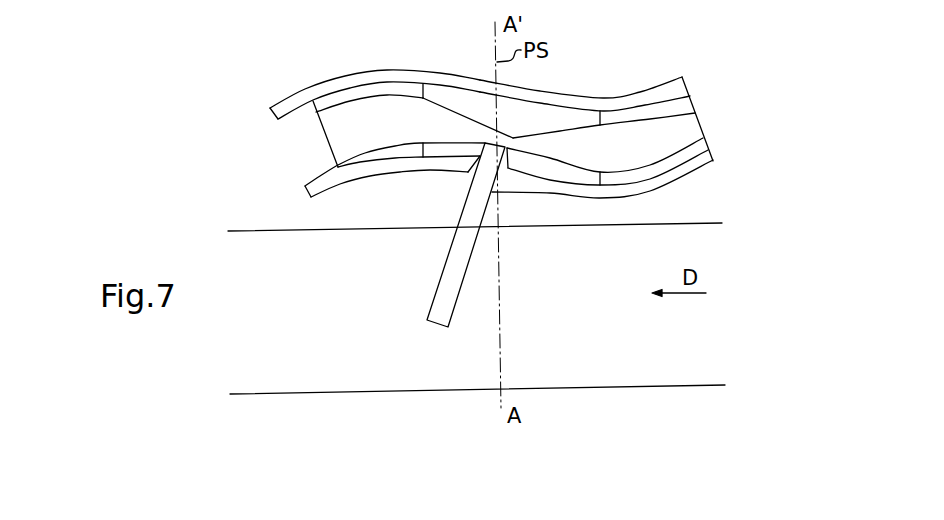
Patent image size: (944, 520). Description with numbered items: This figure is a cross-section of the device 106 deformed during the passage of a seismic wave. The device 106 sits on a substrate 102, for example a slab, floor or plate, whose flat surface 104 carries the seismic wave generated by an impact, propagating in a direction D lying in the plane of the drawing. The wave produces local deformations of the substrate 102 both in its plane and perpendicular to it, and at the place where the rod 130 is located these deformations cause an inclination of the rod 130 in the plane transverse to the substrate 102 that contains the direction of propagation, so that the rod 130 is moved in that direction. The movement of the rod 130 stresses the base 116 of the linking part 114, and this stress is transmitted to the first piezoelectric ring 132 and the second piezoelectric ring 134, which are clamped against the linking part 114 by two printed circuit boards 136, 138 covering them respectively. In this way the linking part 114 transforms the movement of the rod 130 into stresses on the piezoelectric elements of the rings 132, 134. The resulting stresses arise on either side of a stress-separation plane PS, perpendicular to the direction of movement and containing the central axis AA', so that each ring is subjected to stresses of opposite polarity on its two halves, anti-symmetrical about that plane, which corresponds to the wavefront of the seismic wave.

The substrate 102 is at (289, 383).
The flat surface 104 is at (358, 219).
The device 106 is at (752, 96).
The linking part 114 is at (300, 147).
The base 116 is at (626, 158).
The rod 130 is at (439, 281).
The first piezoelectric ring 132 is at (686, 86).
The second piezoelectric ring 134 is at (712, 140).
The first printed circuit board 136 is at (293, 96).
The second printed circuit board 138 is at (320, 196).